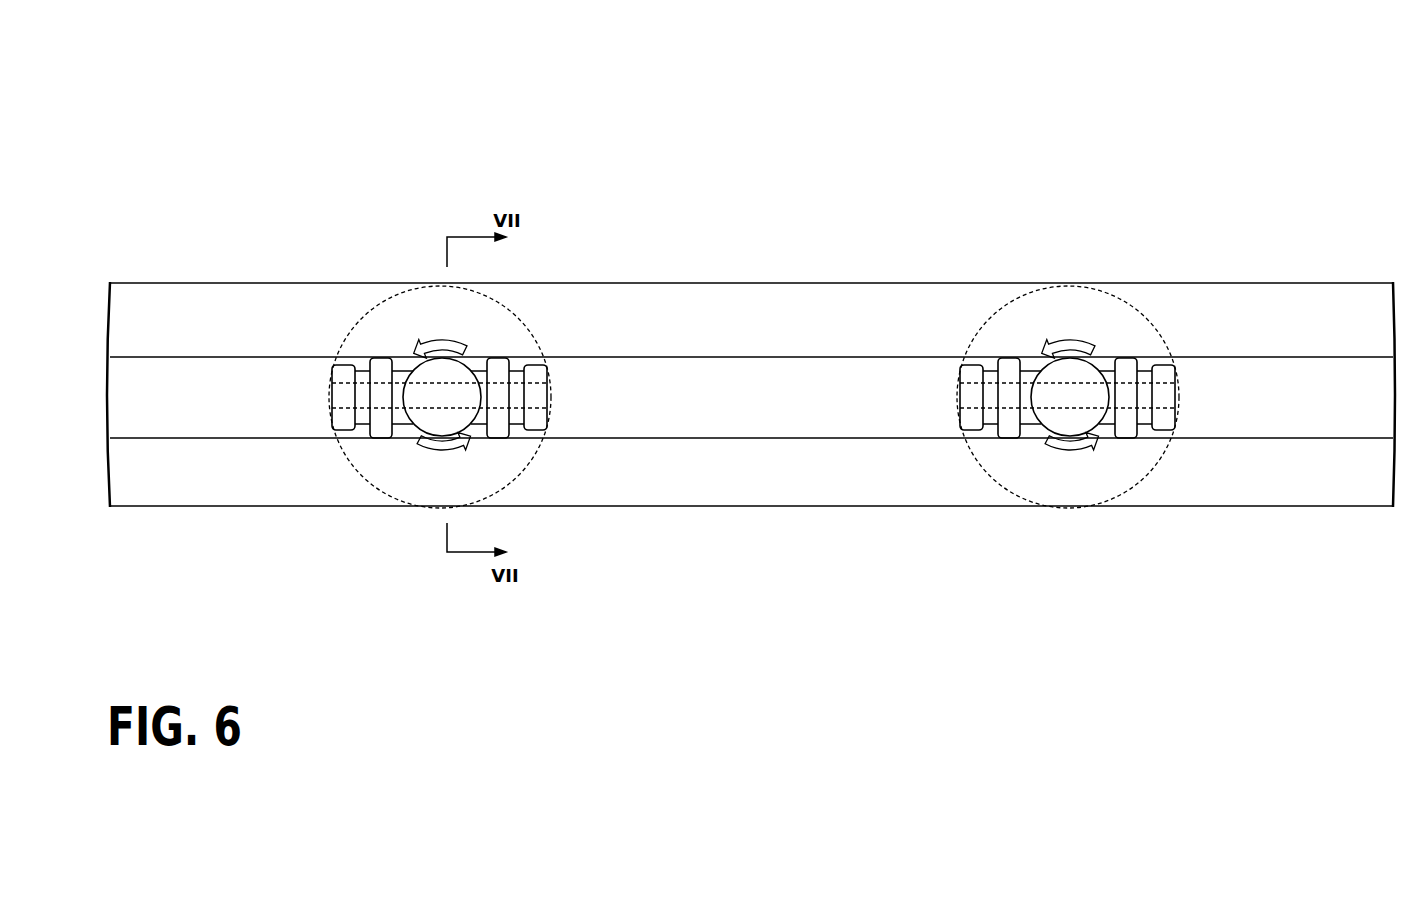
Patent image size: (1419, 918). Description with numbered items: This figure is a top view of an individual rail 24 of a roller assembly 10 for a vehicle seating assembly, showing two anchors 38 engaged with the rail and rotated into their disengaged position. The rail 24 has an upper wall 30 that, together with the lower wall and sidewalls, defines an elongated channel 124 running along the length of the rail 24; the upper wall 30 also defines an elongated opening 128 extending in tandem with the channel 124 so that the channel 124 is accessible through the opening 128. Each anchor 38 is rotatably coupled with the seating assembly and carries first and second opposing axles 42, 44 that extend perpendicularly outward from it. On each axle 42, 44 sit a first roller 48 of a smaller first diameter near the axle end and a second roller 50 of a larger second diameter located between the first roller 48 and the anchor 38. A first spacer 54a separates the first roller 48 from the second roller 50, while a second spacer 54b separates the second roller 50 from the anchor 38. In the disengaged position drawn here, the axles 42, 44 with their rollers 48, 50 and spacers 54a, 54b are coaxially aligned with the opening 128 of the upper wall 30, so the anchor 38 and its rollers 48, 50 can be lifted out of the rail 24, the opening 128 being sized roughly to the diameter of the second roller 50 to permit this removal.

The roller assembly 10 is at (1238, 195).
The rail 24 is at (1296, 303).
The upper wall 30 is at (1302, 487).
The anchor 38 is at (425, 385).
The first axle 42 is at (340, 432).
The second axle 44 is at (543, 353).
The first roller 48 is at (346, 388).
The second roller 50 is at (384, 427).
The first spacer 54a is at (518, 373).
The second spacer 54b is at (400, 420).
The channel 124 is at (618, 400).
The opening 128 is at (1320, 392).